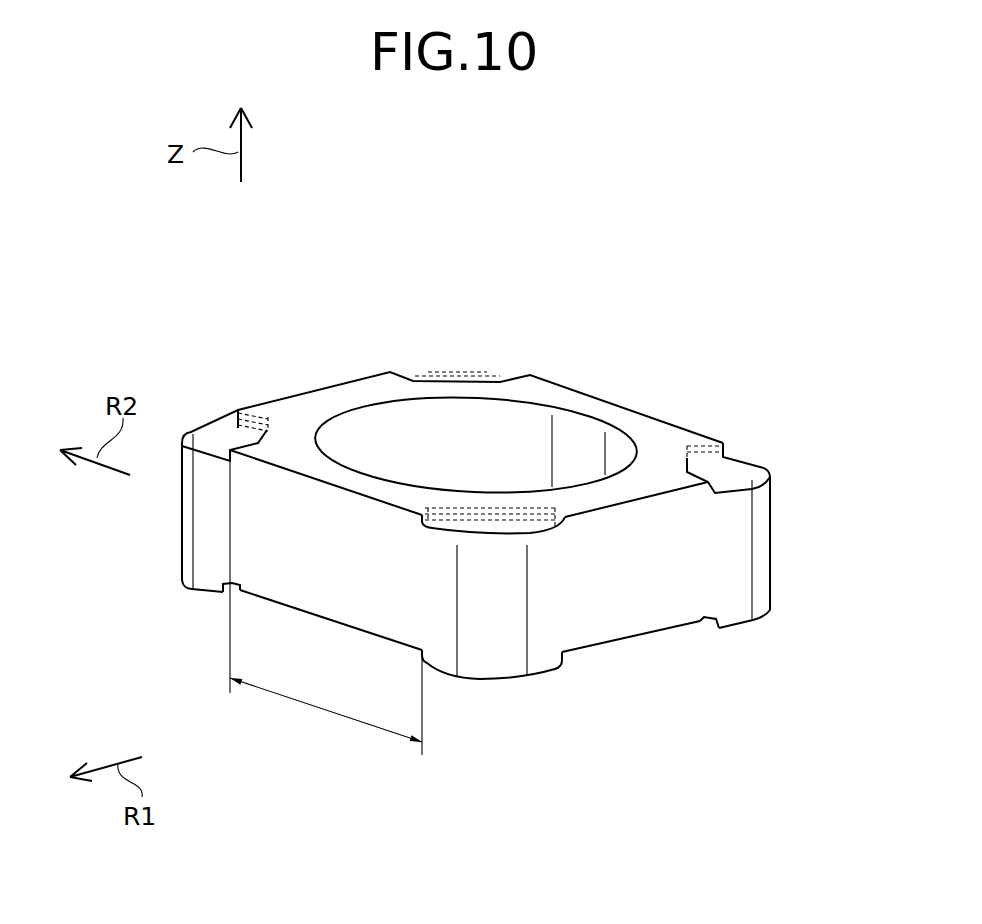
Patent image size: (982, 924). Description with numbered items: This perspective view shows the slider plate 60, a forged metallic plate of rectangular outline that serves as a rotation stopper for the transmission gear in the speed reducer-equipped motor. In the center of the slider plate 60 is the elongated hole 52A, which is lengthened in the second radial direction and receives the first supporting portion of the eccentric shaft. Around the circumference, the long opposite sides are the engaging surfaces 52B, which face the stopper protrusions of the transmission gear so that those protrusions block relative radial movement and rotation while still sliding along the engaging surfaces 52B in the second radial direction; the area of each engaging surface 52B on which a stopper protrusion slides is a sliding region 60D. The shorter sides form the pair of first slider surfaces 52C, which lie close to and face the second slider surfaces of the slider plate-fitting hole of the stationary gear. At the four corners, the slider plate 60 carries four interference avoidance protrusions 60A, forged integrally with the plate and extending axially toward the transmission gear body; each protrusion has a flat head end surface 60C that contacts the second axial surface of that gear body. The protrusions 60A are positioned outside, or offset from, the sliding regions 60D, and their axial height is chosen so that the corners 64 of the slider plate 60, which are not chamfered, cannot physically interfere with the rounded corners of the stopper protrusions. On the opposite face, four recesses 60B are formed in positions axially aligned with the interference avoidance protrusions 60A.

The slider plate 60 is at (588, 231).
The elongated hole 52A is at (368, 432).
The engaging surfaces 52B is at (300, 520).
The first slider surfaces 52C is at (638, 584).
The interference avoidance protrusions 60A is at (225, 594).
The recesses 60B is at (213, 440).
The head end surface 60C is at (190, 586).
The sliding region 60D is at (318, 710).
The corners 64 is at (300, 614).